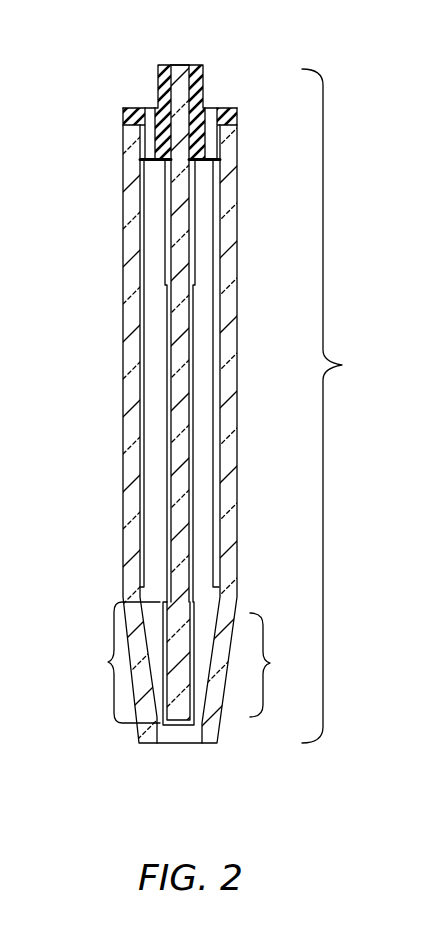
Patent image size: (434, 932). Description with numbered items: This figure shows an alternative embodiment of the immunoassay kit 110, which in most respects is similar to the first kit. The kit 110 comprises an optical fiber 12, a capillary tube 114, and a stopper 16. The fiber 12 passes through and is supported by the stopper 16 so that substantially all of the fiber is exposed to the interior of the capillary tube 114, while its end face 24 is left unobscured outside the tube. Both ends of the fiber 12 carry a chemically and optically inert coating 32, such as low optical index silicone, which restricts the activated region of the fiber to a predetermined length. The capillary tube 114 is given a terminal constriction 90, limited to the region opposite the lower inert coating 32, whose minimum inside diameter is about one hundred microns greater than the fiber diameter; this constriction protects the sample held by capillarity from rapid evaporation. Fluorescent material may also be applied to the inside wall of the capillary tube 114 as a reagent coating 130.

The optical fiber 12 is at (175, 432).
The stopper 16 is at (223, 108).
The end face 24 is at (178, 65).
The inert coating 32 is at (121, 662).
The terminal constriction 90 is at (273, 665).
The kit 110 is at (341, 406).
The capillary tube 114 is at (232, 390).
The reagent coating 130 is at (141, 316).